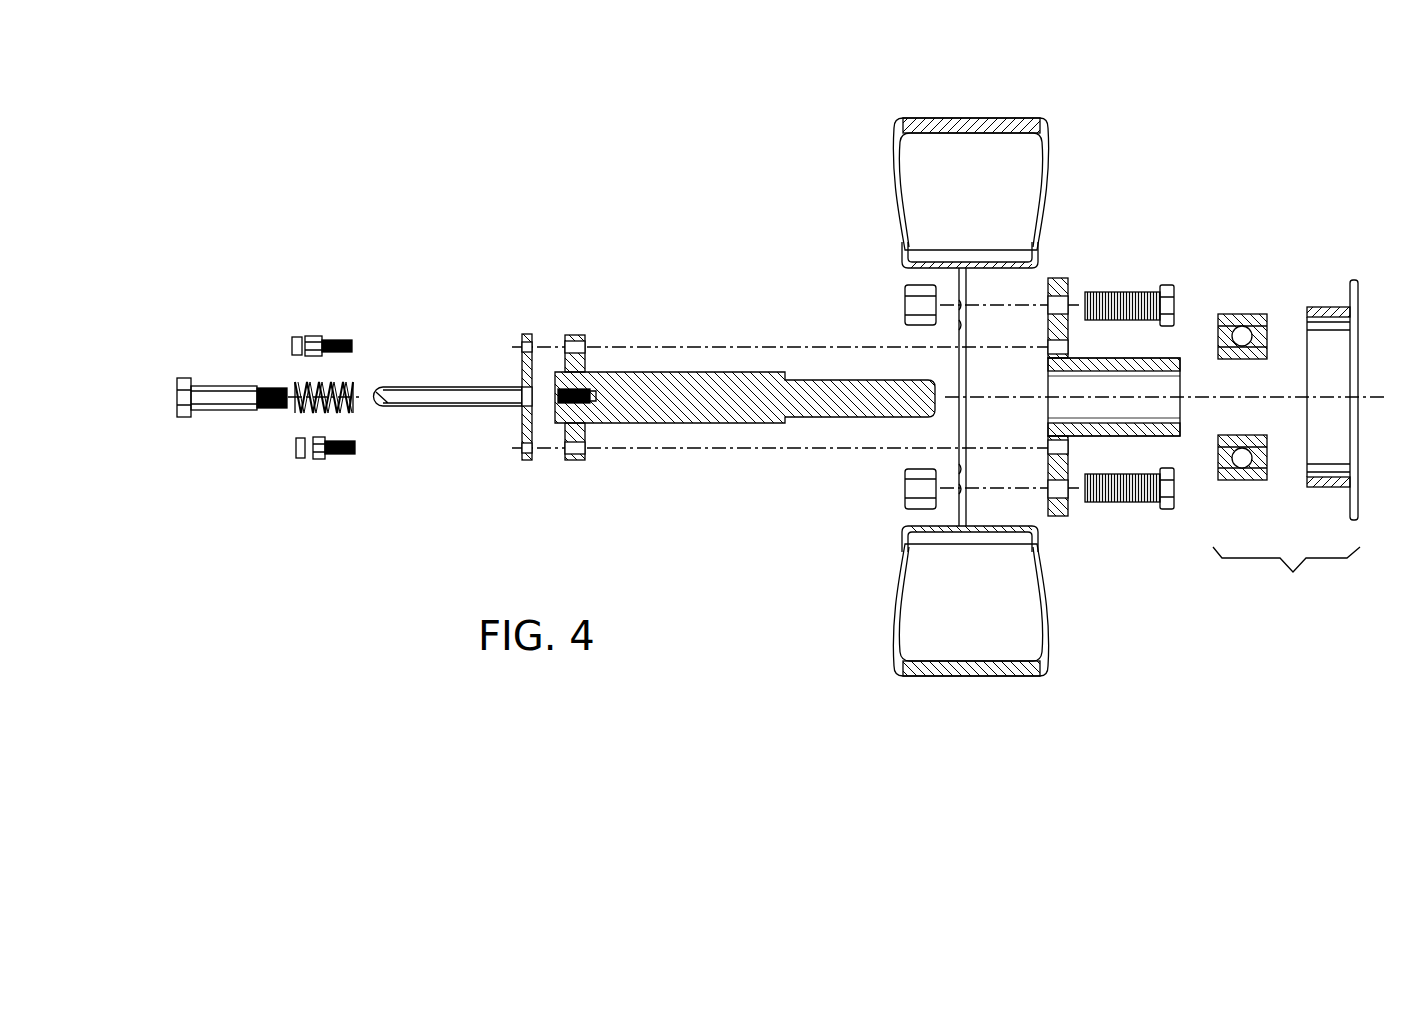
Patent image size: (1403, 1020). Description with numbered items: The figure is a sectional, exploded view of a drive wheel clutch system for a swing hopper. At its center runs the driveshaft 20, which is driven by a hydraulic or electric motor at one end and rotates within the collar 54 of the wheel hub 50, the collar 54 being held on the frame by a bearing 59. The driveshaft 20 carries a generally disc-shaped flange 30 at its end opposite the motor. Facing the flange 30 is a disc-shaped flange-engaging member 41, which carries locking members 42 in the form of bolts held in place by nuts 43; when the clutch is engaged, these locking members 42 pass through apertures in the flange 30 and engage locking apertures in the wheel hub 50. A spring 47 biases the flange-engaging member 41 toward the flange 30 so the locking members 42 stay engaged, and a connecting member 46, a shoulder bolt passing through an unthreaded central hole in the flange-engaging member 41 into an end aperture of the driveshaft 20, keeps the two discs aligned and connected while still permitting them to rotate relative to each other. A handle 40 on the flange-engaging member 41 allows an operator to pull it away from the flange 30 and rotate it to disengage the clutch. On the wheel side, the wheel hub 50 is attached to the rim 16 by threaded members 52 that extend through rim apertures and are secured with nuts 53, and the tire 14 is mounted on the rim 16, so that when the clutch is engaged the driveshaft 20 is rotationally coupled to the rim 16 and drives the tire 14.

The tire 14 is at (1000, 118).
The rim 16 is at (1040, 258).
The driveshaft 20 is at (643, 382).
The flange 30 is at (575, 335).
The handle 40 is at (463, 392).
The flange-engaging member 41 is at (522, 337).
The locking members 42 is at (330, 340).
The nuts 43 is at (318, 337).
The connecting member 46 is at (214, 396).
The spring 47 is at (297, 400).
The wheel hub 50 is at (1057, 277).
The threaded members 52 is at (1135, 290).
The nuts 53 is at (904, 305).
The collar 54 is at (1168, 357).
The bearing 59 is at (1286, 446).